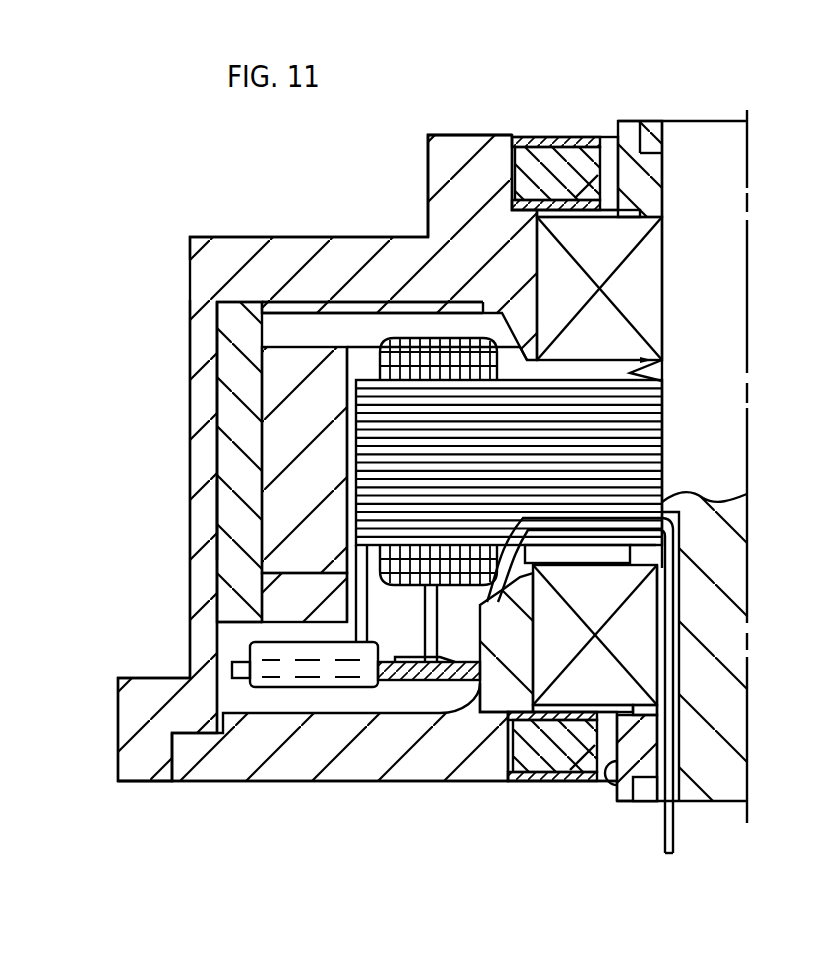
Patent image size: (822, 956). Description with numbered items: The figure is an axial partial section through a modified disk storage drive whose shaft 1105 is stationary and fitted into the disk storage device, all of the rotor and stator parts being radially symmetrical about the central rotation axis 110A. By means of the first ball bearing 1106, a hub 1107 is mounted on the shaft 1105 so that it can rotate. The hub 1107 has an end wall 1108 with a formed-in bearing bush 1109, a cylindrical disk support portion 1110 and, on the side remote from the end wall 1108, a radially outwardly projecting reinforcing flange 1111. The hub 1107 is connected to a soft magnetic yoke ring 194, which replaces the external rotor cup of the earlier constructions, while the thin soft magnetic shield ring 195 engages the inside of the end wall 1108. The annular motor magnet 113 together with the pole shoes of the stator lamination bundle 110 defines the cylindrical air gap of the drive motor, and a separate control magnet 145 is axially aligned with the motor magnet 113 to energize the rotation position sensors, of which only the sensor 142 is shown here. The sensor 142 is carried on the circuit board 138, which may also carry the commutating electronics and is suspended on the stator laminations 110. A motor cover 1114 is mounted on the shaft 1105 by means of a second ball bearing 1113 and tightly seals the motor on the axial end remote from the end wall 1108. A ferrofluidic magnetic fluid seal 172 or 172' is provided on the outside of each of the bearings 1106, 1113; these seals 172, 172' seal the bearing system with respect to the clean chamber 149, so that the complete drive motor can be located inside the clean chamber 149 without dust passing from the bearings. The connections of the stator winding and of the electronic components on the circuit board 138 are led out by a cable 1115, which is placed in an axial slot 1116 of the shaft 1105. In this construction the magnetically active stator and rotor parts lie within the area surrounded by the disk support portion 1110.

The clean chamber 149 is at (292, 171).
The hub 1107 is at (218, 257).
The soft magnetic shield ring 195 is at (290, 305).
The end wall 1108 is at (345, 255).
The bearing bush 1109 is at (450, 150).
The magnetic fluid seal 172 is at (565, 138).
The shaft 1105 is at (700, 137).
The central rotation axis 110A is at (757, 125).
The first ball bearing 1106 is at (628, 254).
The motor magnet 113 is at (277, 375).
The stator lamination bundle 110 is at (357, 427).
The disk support portion 1110 is at (195, 470).
The soft magnetic yoke ring 194 is at (227, 510).
The control magnet 145 is at (268, 582).
The reinforcing flange 1111 is at (137, 768).
The motor cover 1114 is at (210, 770).
The rotation position sensor 142 is at (300, 672).
The circuit board 138 is at (415, 672).
The magnetic fluid seal 172' is at (543, 793).
The second ball bearing 1113 is at (570, 690).
The axial slot 1116 is at (648, 790).
The cable 1115 is at (666, 845).